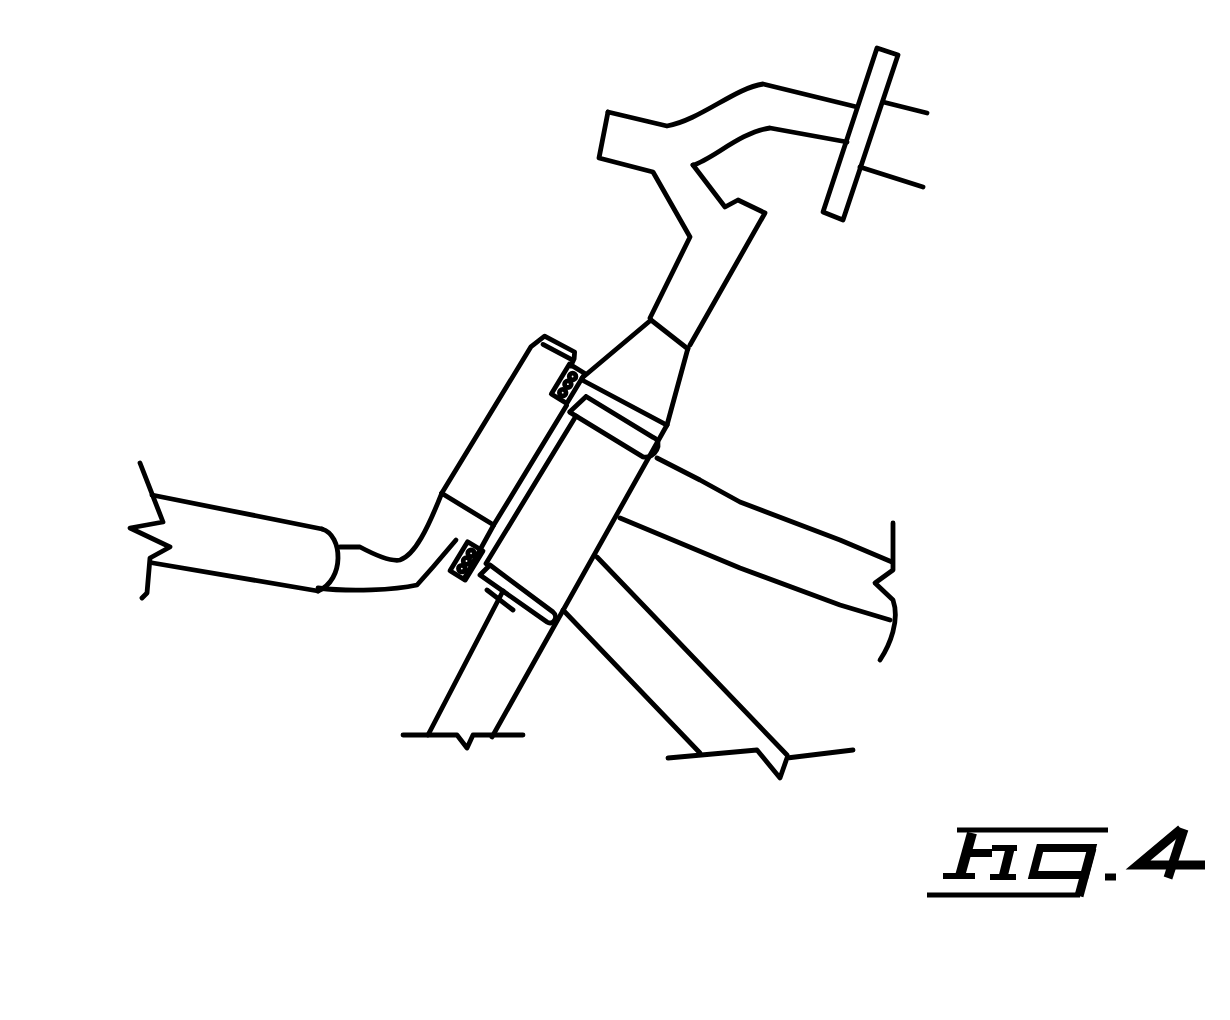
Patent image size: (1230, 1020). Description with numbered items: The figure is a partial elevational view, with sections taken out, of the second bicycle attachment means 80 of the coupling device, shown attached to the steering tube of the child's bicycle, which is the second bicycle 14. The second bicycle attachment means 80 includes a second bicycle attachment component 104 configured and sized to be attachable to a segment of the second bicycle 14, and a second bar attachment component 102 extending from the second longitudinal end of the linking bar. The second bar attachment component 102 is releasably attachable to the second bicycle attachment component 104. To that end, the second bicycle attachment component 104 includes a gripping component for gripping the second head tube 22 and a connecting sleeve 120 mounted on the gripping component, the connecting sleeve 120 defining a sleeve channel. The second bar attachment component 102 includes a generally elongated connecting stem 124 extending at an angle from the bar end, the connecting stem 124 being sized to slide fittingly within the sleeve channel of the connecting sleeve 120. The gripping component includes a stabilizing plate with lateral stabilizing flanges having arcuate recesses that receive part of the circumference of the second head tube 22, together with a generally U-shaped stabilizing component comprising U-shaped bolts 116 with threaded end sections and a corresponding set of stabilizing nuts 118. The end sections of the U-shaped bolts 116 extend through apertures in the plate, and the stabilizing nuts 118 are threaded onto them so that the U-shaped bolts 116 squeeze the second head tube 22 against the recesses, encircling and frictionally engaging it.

The second bicycle 14 is at (907, 460).
The second head tube 22 is at (525, 566).
The second bicycle attachment means 80 is at (527, 473).
The second bar attachment component 102 is at (416, 513).
The second bicycle attachment component 104 is at (469, 368).
The U-shaped bolts 116 is at (660, 443).
The stabilizing nuts 118 is at (580, 374).
The connecting sleeve 120 is at (485, 455).
The connecting stem 124 is at (562, 330).